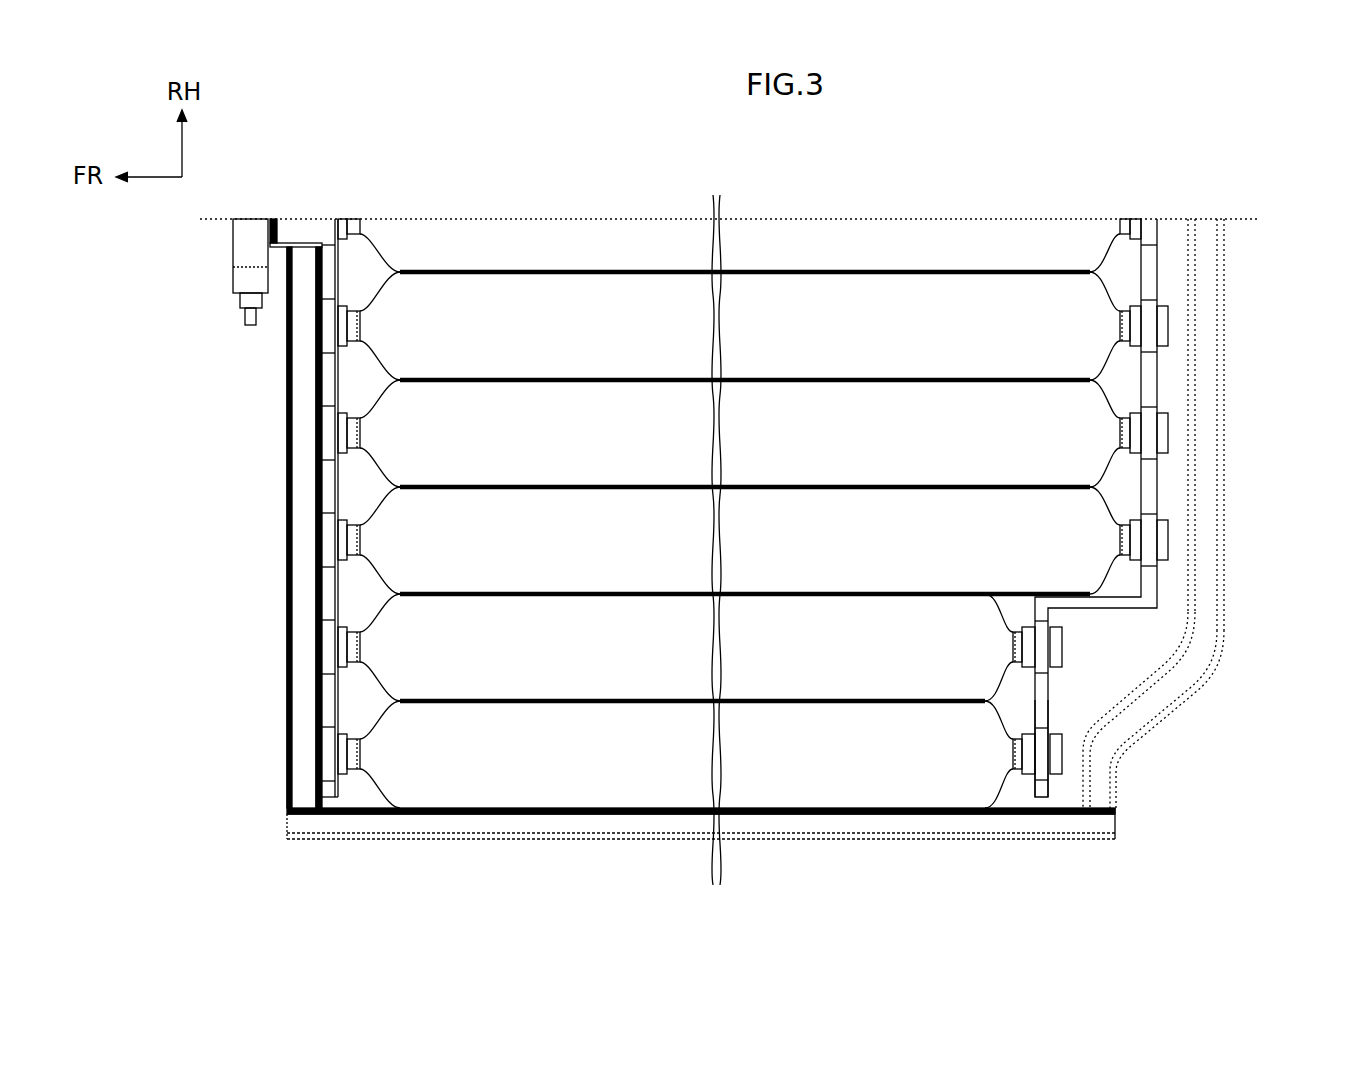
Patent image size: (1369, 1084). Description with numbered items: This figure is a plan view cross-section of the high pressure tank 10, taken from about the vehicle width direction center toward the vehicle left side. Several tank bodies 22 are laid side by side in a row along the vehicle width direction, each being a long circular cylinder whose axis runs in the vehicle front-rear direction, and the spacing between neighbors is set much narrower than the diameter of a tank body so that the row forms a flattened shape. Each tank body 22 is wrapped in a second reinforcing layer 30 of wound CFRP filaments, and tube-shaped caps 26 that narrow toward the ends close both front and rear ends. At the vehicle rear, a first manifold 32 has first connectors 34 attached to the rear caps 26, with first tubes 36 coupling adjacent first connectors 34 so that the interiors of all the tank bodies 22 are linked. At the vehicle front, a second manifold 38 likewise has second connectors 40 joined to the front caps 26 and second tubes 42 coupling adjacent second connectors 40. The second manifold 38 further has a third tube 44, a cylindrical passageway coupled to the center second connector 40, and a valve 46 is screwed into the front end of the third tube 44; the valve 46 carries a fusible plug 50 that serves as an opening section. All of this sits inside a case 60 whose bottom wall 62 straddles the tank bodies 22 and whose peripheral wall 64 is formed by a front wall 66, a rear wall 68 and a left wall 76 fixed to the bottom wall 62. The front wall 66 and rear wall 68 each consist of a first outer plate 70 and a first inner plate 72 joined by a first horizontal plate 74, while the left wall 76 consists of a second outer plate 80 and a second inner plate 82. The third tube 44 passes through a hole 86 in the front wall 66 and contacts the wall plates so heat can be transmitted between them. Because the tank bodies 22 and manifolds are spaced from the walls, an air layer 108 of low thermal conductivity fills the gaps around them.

The high pressure tank 10 is at (300, 180).
The tank body 22 is at (548, 240).
The cap 26 is at (357, 225).
The second reinforcing layer 30 is at (822, 245).
The first manifold 32 is at (1177, 364).
The first connector 34 is at (1163, 225).
The first tube 36 is at (1148, 268).
The second manifold 38 is at (352, 471).
The second connector 40 is at (341, 222).
The second tube 42 is at (372, 265).
The third tube 44 is at (274, 222).
The valve 46 is at (231, 243).
The fusible plug 50 is at (245, 312).
The case 60 is at (1207, 513).
The bottom wall 62 is at (1165, 692).
The peripheral wall 64 is at (289, 814).
The front wall 66 is at (286, 718).
The rear wall 68 is at (1222, 575).
The first outer plate 70 is at (318, 462).
The first inner plate 72 is at (321, 515).
The first horizontal plate 74 is at (289, 398).
The left wall 76 is at (523, 842).
The second outer plate 80 is at (630, 842).
The second inner plate 82 is at (660, 814).
The hole 86 is at (232, 298).
The air layer 108 is at (1018, 792).